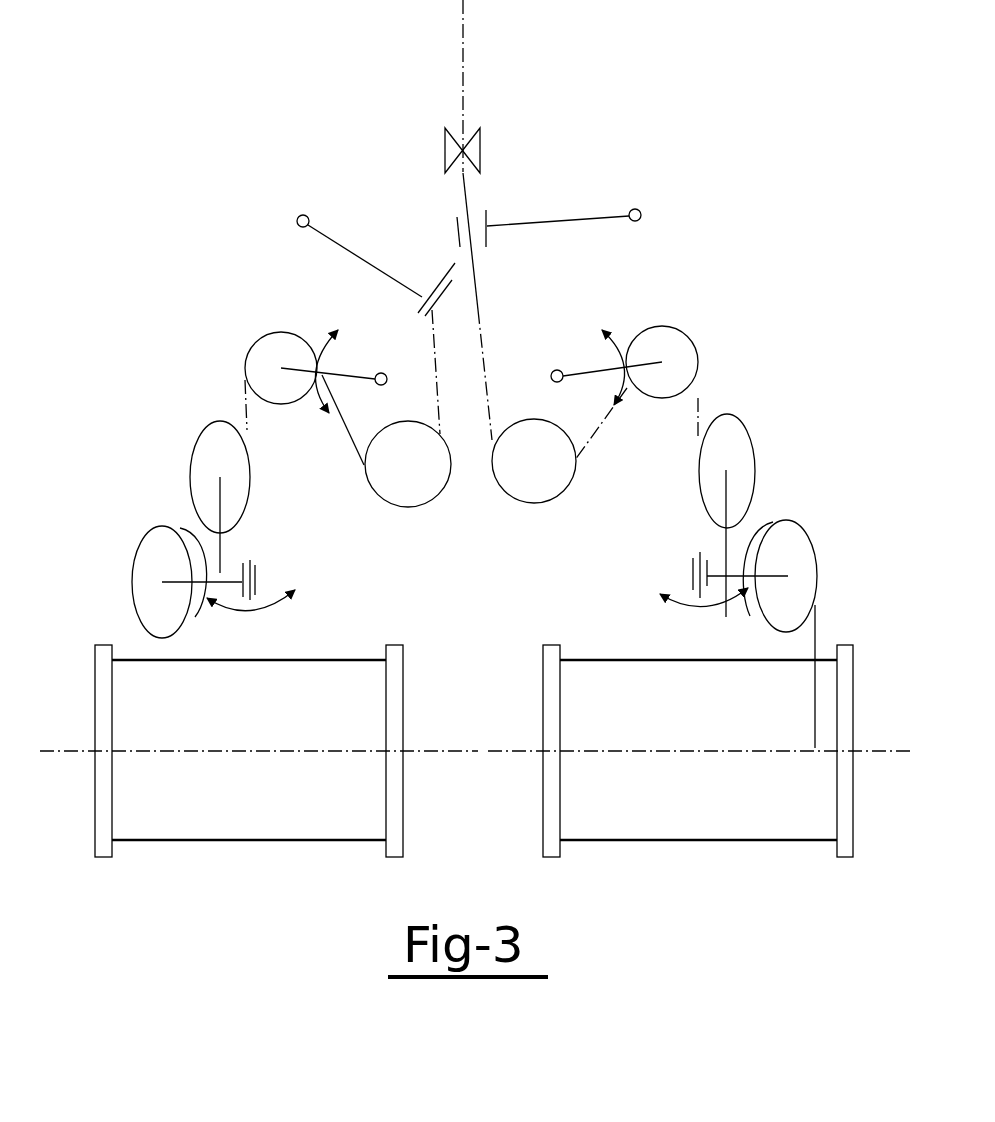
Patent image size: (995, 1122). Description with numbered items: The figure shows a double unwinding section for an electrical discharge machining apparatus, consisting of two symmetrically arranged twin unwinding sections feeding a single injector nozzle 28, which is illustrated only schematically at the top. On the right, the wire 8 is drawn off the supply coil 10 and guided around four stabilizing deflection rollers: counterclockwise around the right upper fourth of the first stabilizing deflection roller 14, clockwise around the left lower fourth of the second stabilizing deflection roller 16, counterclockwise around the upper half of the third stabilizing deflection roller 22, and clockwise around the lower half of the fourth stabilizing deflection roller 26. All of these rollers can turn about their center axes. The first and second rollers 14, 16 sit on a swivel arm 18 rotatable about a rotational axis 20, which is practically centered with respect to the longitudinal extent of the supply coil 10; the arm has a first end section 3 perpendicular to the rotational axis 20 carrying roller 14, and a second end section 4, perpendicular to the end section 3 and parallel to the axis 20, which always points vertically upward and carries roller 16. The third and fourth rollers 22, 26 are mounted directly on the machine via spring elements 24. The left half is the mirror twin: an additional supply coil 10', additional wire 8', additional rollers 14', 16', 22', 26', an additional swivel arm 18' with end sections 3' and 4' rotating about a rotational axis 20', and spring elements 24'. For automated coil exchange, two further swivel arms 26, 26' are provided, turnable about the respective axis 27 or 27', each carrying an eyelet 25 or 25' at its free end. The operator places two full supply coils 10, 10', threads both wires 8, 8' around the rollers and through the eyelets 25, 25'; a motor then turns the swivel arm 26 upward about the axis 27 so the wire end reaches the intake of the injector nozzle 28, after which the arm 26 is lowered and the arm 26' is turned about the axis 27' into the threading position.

The first end section 3 is at (768, 552).
The end section 3' is at (180, 550).
The second end section 4 is at (703, 535).
The end section 4' is at (254, 529).
The wire 8 is at (493, 306).
The additional wire 8' is at (417, 372).
The supply coil 10 is at (698, 772).
The additional supply coil 10' is at (249, 771).
The first stabilizing deflection roller 14 is at (816, 628).
The additional stabilizing deflection roller 14' is at (139, 573).
The second stabilizing deflection roller 16 is at (750, 504).
The additional stabilizing deflection roller 16' is at (208, 482).
The swivel arm 18 is at (747, 614).
The additional swivel arm 18' is at (202, 617).
The rotational axis 20 is at (704, 604).
The rotational axis 20' is at (274, 575).
The third stabilizing deflection roller 22 is at (687, 368).
The additional stabilizing deflection roller 22' is at (276, 366).
The spring elements 24 is at (600, 364).
The spring elements 24' is at (340, 367).
The eyelet 25 is at (514, 216).
The eyelet 25' is at (427, 276).
The fourth stabilizing deflection roller / swivel arm 26 is at (558, 358).
The additional stabilizing deflection roller / swivel arm 26' is at (379, 371).
The rotational axis 27 is at (654, 237).
The rotational axis 27' is at (271, 239).
The injector nozzle 28 is at (503, 140).